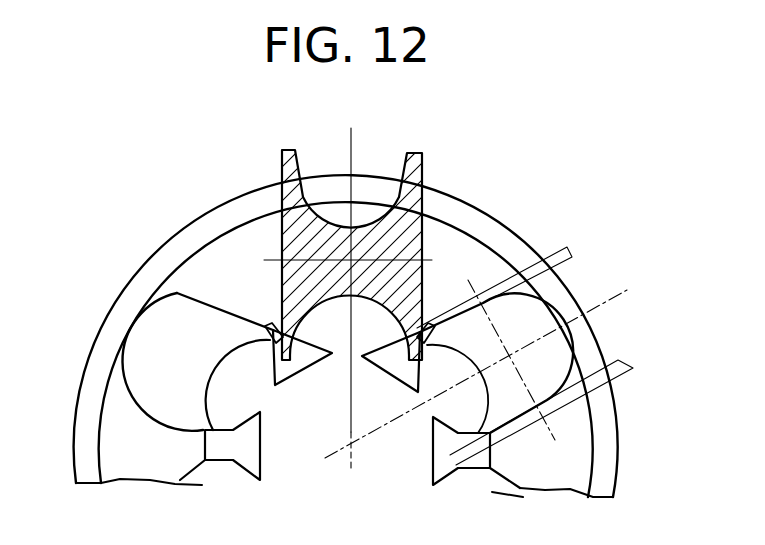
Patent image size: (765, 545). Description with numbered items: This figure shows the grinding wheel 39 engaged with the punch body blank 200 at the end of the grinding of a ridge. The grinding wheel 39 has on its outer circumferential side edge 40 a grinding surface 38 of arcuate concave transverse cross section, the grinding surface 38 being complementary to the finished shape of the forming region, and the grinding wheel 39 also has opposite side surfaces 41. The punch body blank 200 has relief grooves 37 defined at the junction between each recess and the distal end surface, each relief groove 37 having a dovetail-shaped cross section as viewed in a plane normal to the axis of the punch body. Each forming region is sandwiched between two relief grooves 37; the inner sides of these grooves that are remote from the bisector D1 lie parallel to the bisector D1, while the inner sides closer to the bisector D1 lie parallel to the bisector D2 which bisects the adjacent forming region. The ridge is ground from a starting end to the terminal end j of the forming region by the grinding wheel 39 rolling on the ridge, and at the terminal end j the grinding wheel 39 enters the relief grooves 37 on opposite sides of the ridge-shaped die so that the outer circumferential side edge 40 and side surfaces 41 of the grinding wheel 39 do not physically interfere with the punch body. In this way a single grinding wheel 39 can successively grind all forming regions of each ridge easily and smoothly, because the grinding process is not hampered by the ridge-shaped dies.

The punch body blank 200 is at (216, 207).
The grinding surface 38 is at (323, 308).
The grinding wheel 39 is at (425, 247).
The outer circumferential side edge 40 is at (282, 367).
The relief groove 37 is at (372, 368).
The side surfaces 41 is at (270, 345).
The terminal end j is at (412, 292).
The bisector D1 is at (352, 143).
The bisector D2 is at (607, 300).